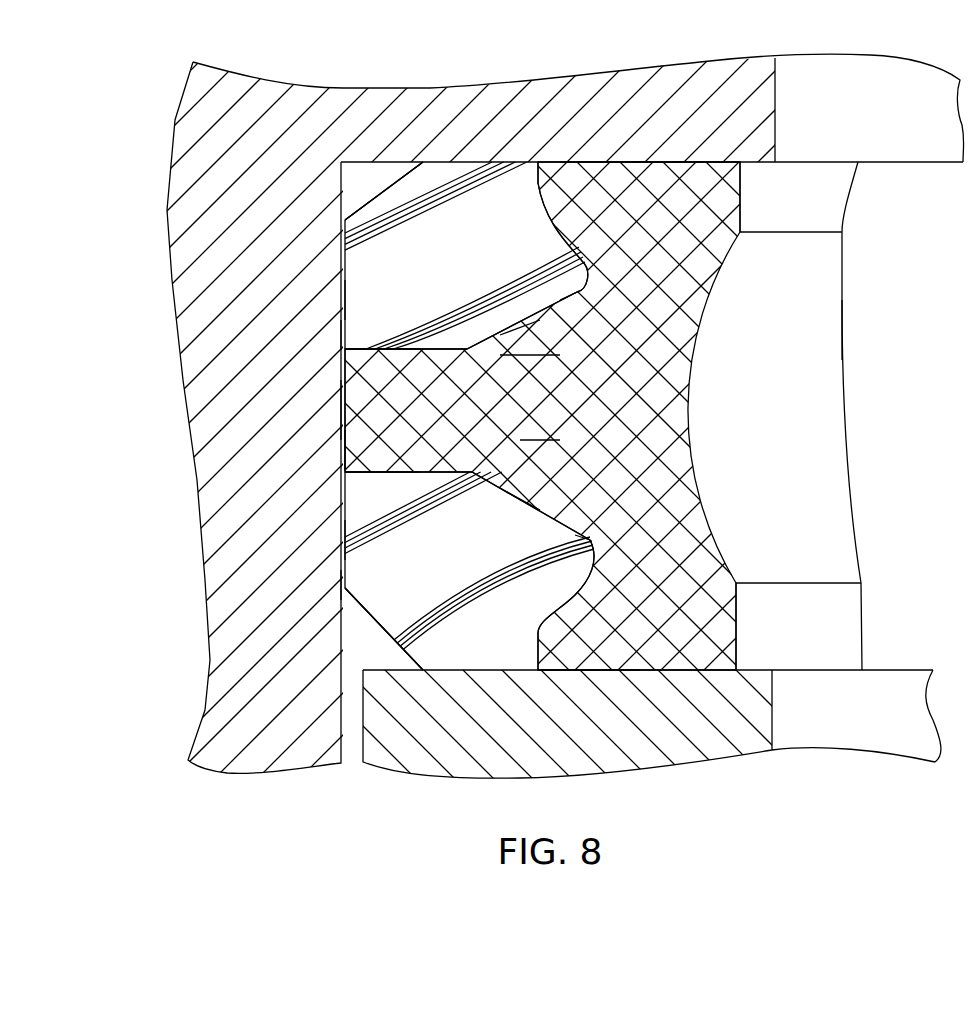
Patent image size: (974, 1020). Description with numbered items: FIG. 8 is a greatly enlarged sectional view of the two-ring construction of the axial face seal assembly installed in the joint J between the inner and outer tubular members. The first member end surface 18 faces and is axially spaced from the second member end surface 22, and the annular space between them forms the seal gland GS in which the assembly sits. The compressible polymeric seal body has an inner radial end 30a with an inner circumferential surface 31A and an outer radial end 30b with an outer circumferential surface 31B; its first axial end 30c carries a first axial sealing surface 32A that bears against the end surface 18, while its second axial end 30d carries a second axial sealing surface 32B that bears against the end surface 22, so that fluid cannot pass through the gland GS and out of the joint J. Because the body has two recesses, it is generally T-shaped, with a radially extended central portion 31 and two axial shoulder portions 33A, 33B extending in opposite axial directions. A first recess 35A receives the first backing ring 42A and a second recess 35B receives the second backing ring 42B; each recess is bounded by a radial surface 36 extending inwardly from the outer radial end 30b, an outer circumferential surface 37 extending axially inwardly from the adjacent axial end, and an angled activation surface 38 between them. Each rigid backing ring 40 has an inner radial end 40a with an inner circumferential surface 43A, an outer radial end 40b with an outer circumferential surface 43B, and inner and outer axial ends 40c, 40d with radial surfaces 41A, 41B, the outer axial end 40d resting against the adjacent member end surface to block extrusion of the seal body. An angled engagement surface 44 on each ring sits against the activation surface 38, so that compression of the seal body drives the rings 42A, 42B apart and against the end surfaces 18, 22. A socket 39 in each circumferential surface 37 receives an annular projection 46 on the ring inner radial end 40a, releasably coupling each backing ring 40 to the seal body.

The joint J is at (195, 404).
The first member end surface 18 is at (737, 655).
The second member end surface 22 is at (668, 168).
The inner radial end 30a is at (840, 410).
The outer radial end 30b is at (341, 407).
The first axial end 30c is at (582, 672).
The second axial end 30d is at (645, 140).
The central portion 31 is at (644, 403).
The inner circumferential surface 31A is at (842, 357).
The outer circumferential surface 31B is at (341, 443).
The first axial sealing surface 32A is at (655, 690).
The second axial sealing surface 32B is at (703, 160).
The first axial shoulder portion 33A is at (710, 607).
The second axial shoulder portion 33B is at (710, 235).
The first recess 35A is at (470, 327).
The second recess 35B is at (490, 410).
The radial surface 36 is at (413, 350).
The outer circumferential surface 37 is at (540, 193).
The angled activation surface 38 is at (523, 357).
The socket 39 is at (553, 265).
The backing ring 40 is at (305, 277).
The inner radial end 40a is at (597, 221).
The outer radial end 40b is at (350, 298).
The inner axial end 40c is at (383, 353).
The outer axial end 40d is at (543, 160).
The radial surface 41A is at (437, 352).
The radial surface 41B is at (483, 160).
The first backing ring 42A is at (330, 592).
The second backing ring 42B is at (434, 158).
The inner circumferential surface 43A is at (598, 262).
The outer circumferential surface 43B is at (340, 338).
The angled engagement surface 44 is at (507, 357).
The annular projection 46 is at (563, 292).
The seal gland GS is at (760, 202).